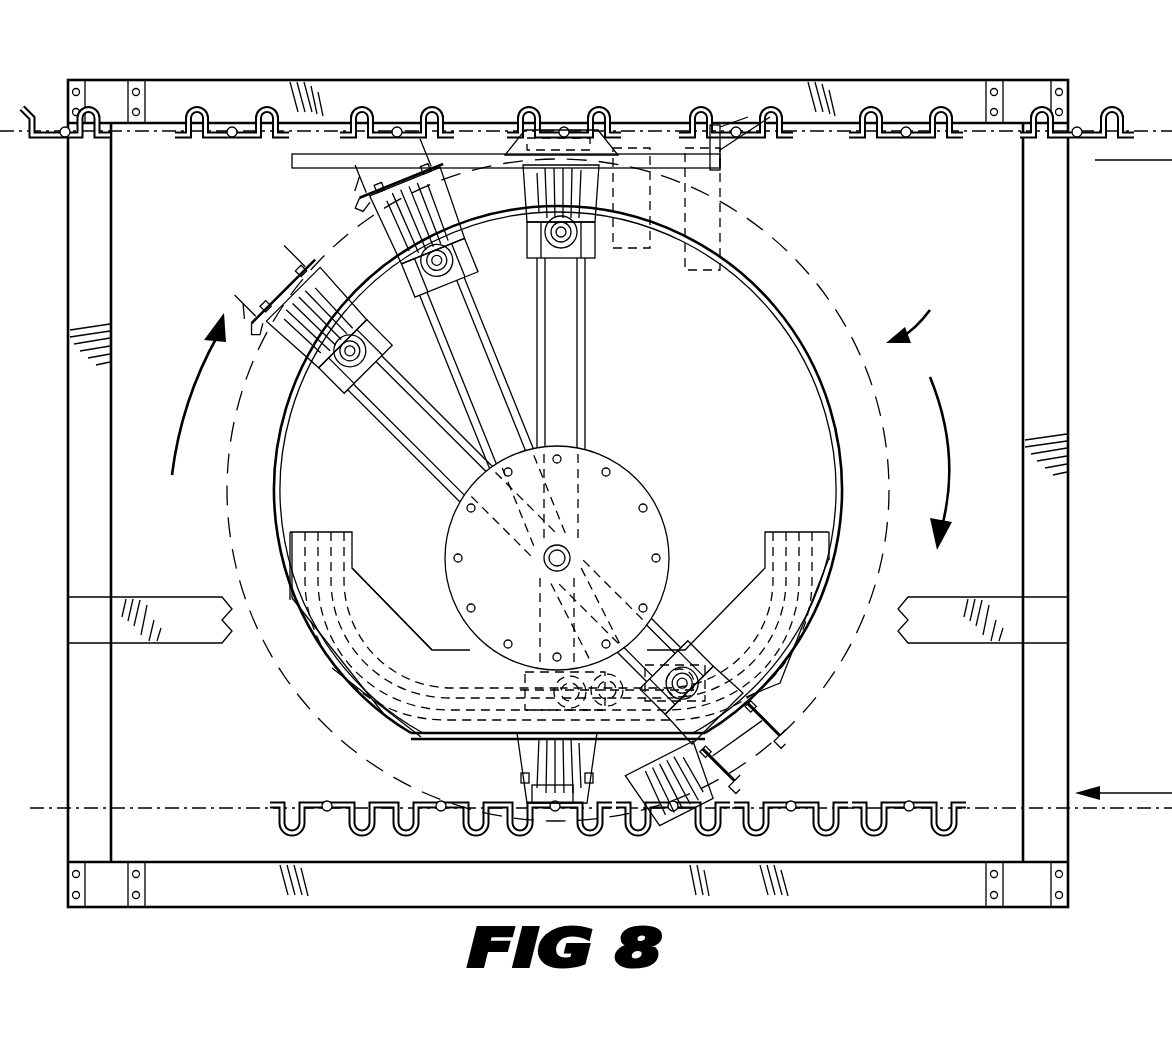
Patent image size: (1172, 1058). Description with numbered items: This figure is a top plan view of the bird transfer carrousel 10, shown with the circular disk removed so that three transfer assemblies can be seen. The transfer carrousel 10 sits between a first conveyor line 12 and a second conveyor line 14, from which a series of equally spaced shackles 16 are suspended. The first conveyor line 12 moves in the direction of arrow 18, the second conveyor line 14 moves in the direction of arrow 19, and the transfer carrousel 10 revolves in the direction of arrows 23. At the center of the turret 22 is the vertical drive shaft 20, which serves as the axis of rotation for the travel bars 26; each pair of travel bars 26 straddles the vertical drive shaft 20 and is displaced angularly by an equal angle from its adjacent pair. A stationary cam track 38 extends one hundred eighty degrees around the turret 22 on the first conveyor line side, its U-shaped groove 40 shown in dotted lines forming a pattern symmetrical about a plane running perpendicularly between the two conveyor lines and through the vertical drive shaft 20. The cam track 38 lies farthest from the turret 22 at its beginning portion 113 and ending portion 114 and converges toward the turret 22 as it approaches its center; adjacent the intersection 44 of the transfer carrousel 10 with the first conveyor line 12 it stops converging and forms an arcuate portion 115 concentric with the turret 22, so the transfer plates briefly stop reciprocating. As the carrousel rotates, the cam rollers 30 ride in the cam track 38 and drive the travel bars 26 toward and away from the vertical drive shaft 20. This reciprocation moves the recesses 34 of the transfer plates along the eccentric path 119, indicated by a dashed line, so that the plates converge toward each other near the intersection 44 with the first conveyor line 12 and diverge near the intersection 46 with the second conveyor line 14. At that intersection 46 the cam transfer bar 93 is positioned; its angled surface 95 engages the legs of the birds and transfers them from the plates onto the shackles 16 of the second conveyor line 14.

The transfer carrousel 10 is at (917, 312).
The first conveyor line 12 is at (1112, 810).
The second conveyor line 14 is at (1162, 136).
The shackles 16 is at (895, 145).
The arrow 18 is at (1150, 793).
The arrow 19 is at (1135, 162).
The vertical drive shaft 20 is at (570, 560).
The turret 22 is at (640, 496).
The arrows 23 is at (185, 392).
The travel bars 26 is at (588, 380).
The cam rollers 30 is at (755, 702).
The recesses 34 is at (318, 262).
The stationary cam track 38 is at (375, 610).
The U-shaped groove 40 is at (395, 646).
The intersection 44 is at (556, 826).
The intersection 46 is at (572, 116).
The cam transfer bar 93 is at (652, 148).
The angled surface 95 is at (505, 155).
The beginning portion 113 is at (798, 532).
The ending portion 114 is at (290, 532).
The arcuate portion 115 is at (505, 745).
The eccentric path 119 is at (850, 300).